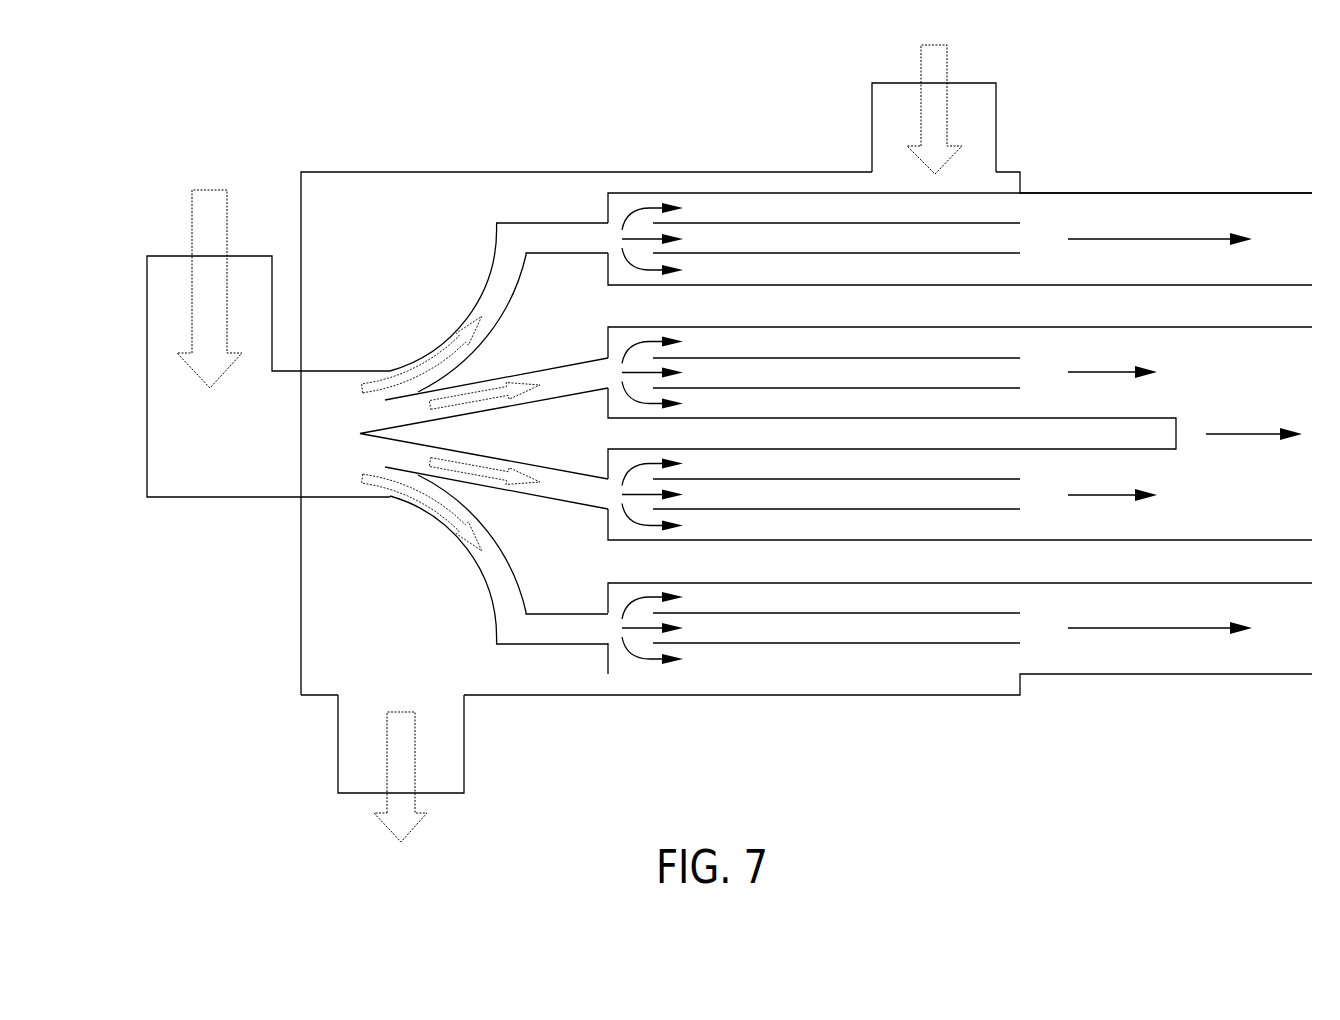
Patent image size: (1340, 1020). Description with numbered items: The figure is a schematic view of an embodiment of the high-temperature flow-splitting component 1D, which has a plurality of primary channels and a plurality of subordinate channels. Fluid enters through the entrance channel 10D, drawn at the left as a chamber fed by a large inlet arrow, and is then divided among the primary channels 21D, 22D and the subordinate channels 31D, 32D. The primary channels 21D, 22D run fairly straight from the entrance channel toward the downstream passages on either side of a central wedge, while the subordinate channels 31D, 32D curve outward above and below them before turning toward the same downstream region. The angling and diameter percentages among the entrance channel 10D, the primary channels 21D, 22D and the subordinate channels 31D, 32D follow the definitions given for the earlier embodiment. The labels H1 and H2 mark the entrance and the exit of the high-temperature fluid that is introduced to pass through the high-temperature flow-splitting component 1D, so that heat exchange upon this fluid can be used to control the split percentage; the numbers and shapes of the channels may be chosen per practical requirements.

The high-temperature flow-splitting component 1D is at (150, 183).
The entrance channel 10D is at (147, 349).
The primary channel 21D is at (558, 363).
The primary channel 22D is at (558, 502).
The subordinate channel 31D is at (462, 325).
The subordinate channel 32D is at (462, 543).
The entrance of the high-temperature fluid H1 is at (967, 100).
The exit of the high-temperature fluid H2 is at (436, 785).